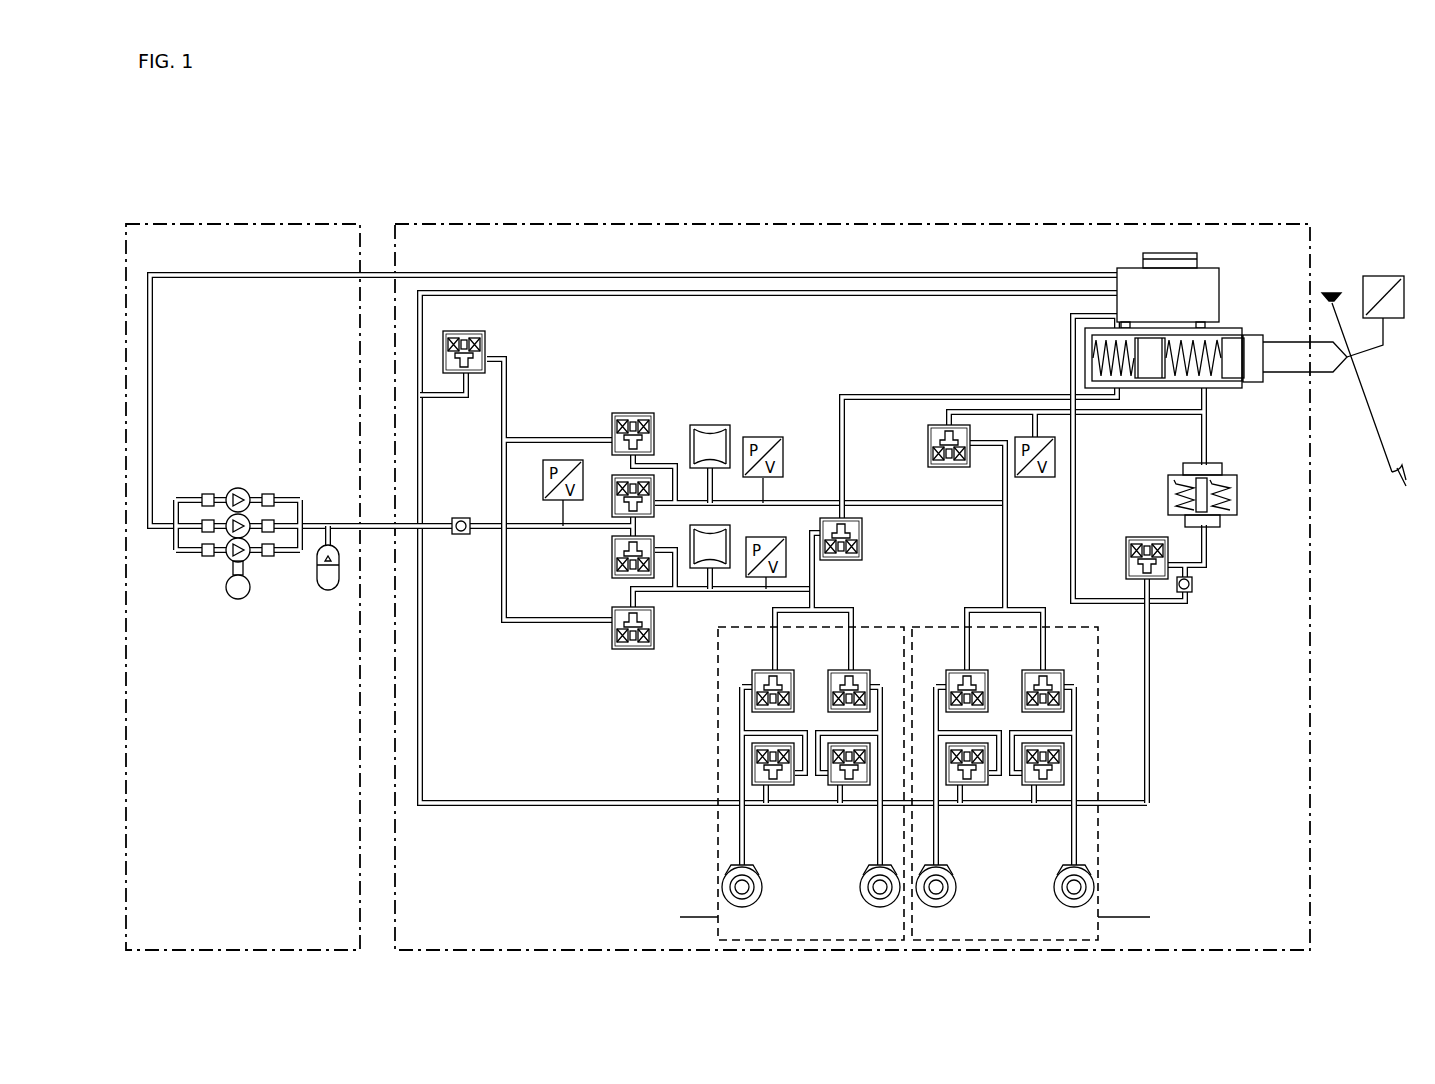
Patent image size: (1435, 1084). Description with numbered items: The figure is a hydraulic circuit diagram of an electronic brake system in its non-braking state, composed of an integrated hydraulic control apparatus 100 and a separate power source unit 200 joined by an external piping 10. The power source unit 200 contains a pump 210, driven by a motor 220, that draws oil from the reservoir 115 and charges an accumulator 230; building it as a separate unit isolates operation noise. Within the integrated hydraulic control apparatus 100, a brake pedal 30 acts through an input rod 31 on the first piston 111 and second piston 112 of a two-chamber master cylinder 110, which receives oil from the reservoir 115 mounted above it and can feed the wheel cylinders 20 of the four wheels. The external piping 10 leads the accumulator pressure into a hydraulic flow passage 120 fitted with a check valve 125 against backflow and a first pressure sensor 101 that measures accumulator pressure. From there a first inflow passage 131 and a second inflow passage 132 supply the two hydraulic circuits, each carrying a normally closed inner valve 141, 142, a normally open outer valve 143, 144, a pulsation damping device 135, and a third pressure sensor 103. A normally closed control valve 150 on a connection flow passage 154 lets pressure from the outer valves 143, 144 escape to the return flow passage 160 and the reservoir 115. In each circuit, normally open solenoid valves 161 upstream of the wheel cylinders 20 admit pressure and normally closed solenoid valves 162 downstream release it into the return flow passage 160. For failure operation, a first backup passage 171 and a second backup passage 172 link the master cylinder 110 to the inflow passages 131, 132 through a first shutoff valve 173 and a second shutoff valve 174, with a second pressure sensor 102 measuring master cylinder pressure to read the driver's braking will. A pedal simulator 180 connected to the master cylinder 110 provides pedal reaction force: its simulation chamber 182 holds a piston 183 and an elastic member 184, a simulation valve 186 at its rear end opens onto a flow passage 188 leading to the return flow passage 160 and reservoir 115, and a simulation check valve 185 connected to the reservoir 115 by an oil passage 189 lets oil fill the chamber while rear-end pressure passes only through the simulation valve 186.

The integrated hydraulic control apparatus 100 is at (665, 222).
The power source unit 200 is at (230, 222).
The pump 210 is at (238, 488).
The motor 220 is at (238, 600).
The accumulator 230 is at (328, 592).
The external piping 10 is at (380, 532).
The wheel cylinder 20 is at (758, 870).
The brake pedal 30 is at (1395, 476).
The input rod 31 is at (1318, 376).
The first pressure sensor 101 is at (563, 459).
The second pressure sensor 102 is at (1035, 478).
The third pressure sensor 103 is at (770, 536).
The master cylinder 110 is at (1183, 337).
The first piston 111 is at (1222, 340).
The second piston 112 is at (1150, 340).
The reservoir 115 is at (1175, 252).
The hydraulic flow passage 120 is at (580, 530).
The check valve 125 is at (462, 517).
The first inflow passage 131 is at (790, 503).
The second inflow passage 132 is at (724, 591).
The pulsation damping device 135 is at (720, 425).
The first inner valve 141 is at (618, 474).
The second inner valve 142 is at (612, 565).
The first outer valve 143 is at (633, 412).
The second outer valve 144 is at (633, 650).
The control valve 150 is at (486, 331).
The connection flow passage 154 is at (504, 422).
The return flow passage 160 is at (605, 805).
The normally open type solenoid valve 161 is at (752, 680).
The normally closed type solenoid valve 162 is at (780, 790).
The first backup passage 171 is at (1152, 413).
The second backup passage 172 is at (870, 395).
The first shutoff valve 173 is at (928, 448).
The second shutoff valve 174 is at (862, 538).
The pedal simulator 180 is at (1234, 522).
The simulation chamber 182 is at (1238, 500).
The piston 183 is at (1232, 482).
The elastic member 184 is at (1232, 520).
The simulation check valve 185 is at (1193, 586).
The simulation valve 186 is at (1140, 536).
The flow passage 188 is at (1148, 718).
The oil passage 189 is at (1076, 460).